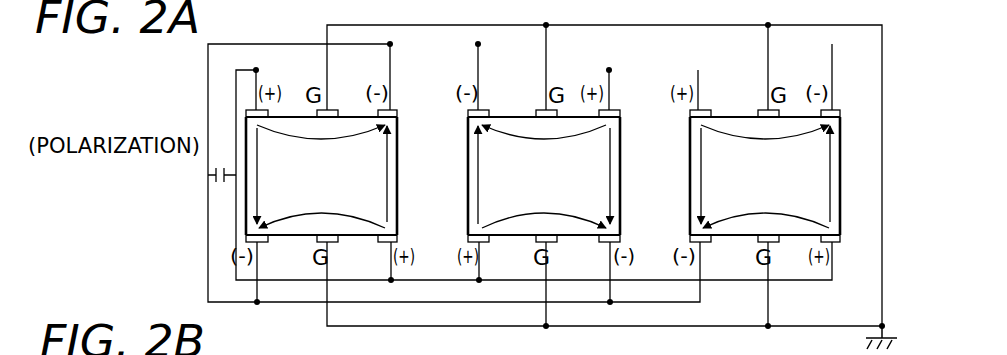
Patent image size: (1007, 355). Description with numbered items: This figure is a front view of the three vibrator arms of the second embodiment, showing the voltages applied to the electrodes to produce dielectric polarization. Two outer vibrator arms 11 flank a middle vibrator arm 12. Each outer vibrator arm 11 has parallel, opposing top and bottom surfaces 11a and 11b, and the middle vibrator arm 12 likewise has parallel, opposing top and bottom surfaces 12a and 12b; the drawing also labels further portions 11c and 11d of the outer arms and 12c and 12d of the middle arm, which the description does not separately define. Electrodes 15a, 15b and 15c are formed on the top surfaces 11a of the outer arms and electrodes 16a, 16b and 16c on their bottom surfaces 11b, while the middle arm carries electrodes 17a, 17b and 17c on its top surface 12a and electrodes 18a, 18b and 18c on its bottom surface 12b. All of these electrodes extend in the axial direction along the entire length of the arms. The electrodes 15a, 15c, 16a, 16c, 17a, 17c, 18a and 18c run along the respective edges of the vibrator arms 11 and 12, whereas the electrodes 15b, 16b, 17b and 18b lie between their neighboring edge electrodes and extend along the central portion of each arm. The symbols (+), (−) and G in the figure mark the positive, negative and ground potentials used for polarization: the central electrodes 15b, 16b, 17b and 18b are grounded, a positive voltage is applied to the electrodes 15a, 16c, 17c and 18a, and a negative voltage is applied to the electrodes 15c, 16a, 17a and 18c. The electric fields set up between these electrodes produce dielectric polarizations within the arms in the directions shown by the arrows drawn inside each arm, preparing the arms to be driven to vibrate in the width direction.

The outer vibrator arm 11 is at (521, 167).
The top surface of outer vibrator arm 11a is at (360, 117).
The bottom surface of outer vibrator arm 11b is at (285, 236).
The left side surface of piezoelectric element 11c is at (246, 150).
The right side surface of piezoelectric element 11d is at (397, 224).
The middle vibrator arm 12 is at (543, 162).
The top surface of middle vibrator arm 12a is at (573, 117).
The bottom surface of middle vibrator arm 12b is at (516, 236).
The left side surface of second piezoelectric element 12c is at (468, 169).
The right side surface of second piezoelectric element 12d is at (620, 225).
The electrode 15a is at (247, 111).
The electrode 15b is at (317, 111).
The electrode 15c is at (396, 112).
The electrode 16a is at (247, 243).
The electrode 16b is at (316, 243).
The electrode 16c is at (380, 242).
The electrode 17a is at (468, 113).
The electrode 17b is at (536, 113).
The electrode 17c is at (620, 114).
The electrode 18a is at (469, 240).
The electrode 18b is at (539, 243).
The electrode 18c is at (600, 243).